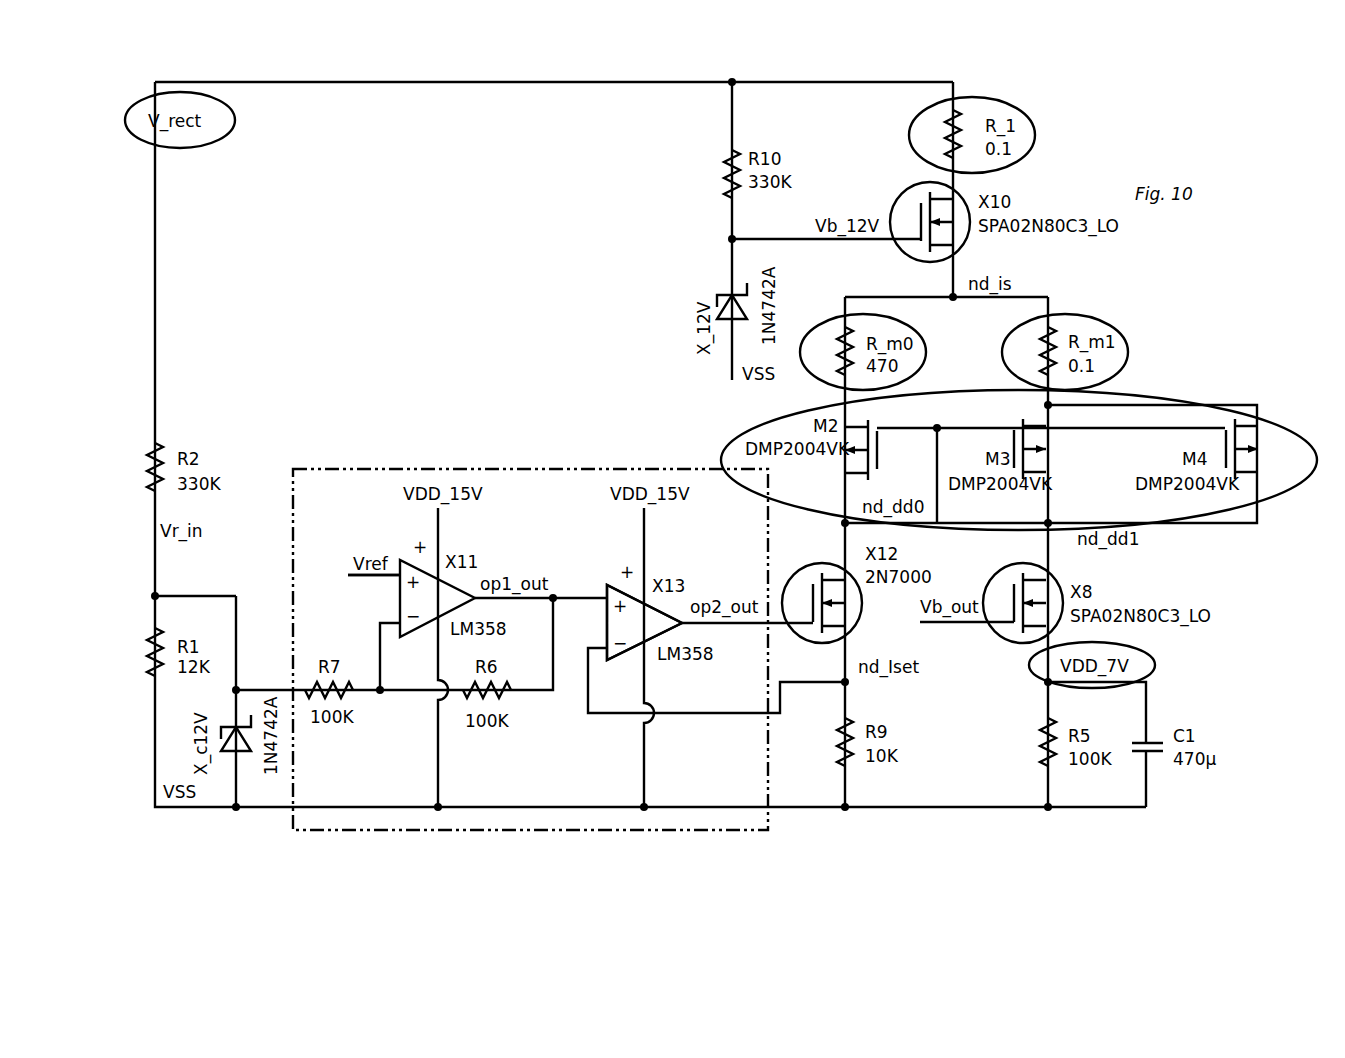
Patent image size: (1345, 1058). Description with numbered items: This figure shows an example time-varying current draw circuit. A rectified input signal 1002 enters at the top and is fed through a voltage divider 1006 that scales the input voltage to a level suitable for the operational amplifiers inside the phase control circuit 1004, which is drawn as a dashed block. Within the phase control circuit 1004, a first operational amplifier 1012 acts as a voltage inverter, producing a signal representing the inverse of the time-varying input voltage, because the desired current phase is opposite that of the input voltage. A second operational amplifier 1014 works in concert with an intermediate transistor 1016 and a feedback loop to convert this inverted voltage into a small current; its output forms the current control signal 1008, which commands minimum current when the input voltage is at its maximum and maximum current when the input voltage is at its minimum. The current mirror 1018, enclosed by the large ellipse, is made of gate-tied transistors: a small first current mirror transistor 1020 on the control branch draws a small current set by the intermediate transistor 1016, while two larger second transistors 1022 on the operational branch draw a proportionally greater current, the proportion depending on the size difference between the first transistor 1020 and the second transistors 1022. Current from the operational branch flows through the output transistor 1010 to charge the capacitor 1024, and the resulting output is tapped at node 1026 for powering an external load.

The input signal V_rect 1002 is at (362, 82).
The phase control circuit 1004 is at (448, 469).
The voltage divider 1006 is at (157, 583).
The current control signal 1008 is at (727, 625).
The output transistor 1010 is at (1000, 637).
The first operational amplifier 1012 is at (400, 590).
The second operational amplifier 1014 is at (595, 587).
The intermediate transistor 1016 is at (860, 610).
The current mirror 1018 is at (1140, 397).
The first current mirror transistor 1020 is at (847, 462).
The second current mirror transistors 1022 is at (1047, 458).
The capacitor 1024 is at (1153, 753).
The output 1026 is at (1143, 648).